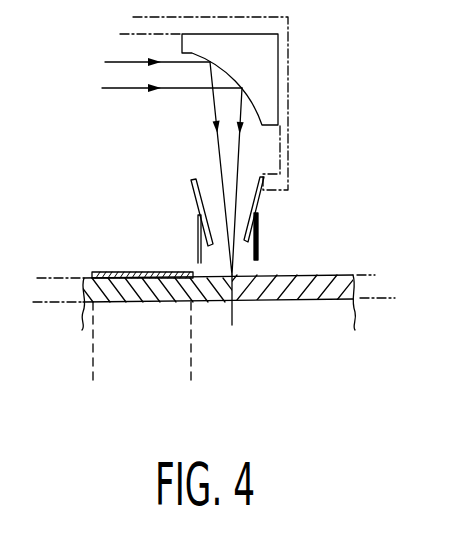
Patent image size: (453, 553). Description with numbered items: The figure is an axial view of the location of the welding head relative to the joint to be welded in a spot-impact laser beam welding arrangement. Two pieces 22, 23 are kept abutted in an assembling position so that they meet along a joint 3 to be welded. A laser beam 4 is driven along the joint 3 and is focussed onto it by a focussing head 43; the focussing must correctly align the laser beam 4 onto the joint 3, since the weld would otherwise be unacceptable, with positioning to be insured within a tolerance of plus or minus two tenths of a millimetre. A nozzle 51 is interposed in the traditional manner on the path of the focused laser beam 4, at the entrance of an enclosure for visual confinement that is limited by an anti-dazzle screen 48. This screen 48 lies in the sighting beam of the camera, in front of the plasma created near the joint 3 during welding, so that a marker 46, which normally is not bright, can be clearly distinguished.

The focussing head 43 is at (263, 60).
The laser beam 4 is at (227, 152).
The anti-dazzle screen 48 is at (190, 225).
The nozzle 51 is at (263, 197).
The joint 3 is at (237, 273).
The marker 46 is at (100, 272).
The piece 22 is at (257, 287).
The piece 23 is at (205, 282).